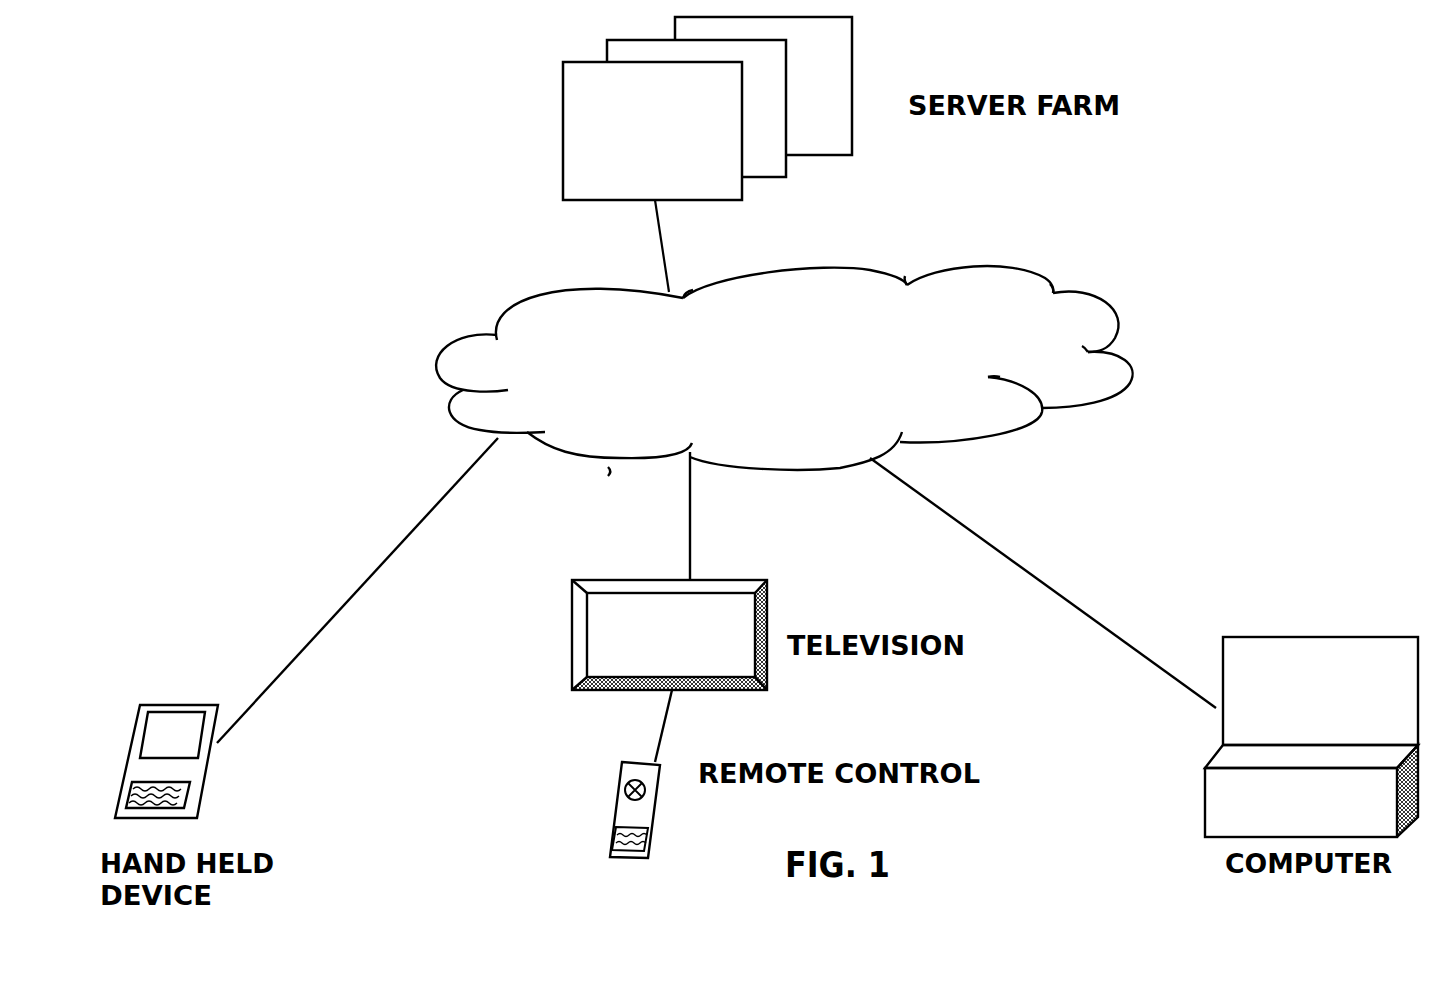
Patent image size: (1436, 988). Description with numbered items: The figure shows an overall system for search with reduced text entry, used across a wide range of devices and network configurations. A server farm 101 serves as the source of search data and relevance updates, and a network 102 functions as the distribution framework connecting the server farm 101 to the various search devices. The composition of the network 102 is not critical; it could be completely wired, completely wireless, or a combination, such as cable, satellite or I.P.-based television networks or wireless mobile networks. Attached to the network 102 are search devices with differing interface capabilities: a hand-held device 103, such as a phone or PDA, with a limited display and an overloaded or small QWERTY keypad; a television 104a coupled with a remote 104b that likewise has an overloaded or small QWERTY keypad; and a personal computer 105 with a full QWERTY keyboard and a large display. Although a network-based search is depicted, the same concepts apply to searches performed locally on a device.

The server farm 101 is at (670, 141).
The network 102 is at (843, 371).
The hand-held device 103 is at (195, 708).
The television 104a is at (568, 617).
The remote 104b is at (620, 780).
The personal computer 105 is at (1377, 655).